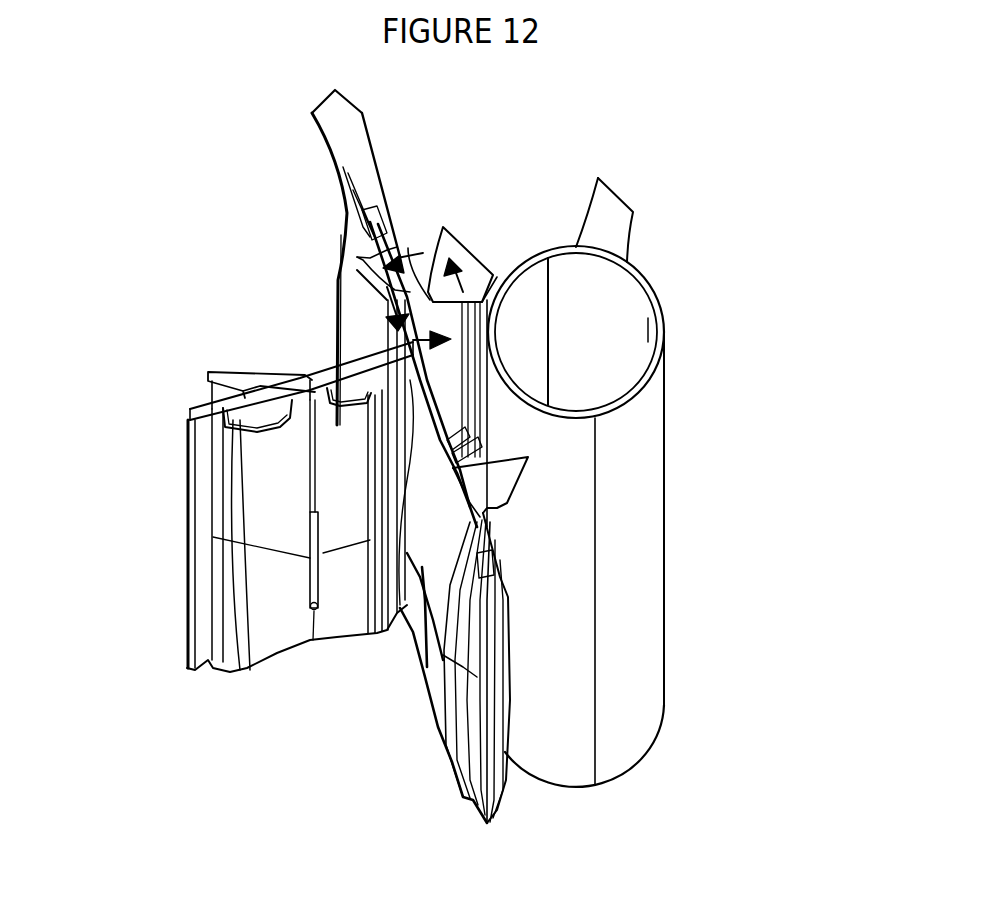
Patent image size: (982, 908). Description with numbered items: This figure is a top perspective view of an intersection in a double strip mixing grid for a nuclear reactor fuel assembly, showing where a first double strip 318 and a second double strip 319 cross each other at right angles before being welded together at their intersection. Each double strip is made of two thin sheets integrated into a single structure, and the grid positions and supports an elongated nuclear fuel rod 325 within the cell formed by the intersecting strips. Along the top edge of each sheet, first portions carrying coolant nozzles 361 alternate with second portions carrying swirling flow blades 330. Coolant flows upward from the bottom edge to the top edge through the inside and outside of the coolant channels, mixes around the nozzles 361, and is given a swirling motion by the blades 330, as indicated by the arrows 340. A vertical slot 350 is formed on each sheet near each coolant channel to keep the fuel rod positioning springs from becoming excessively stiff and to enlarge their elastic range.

The first double strip 318 is at (207, 668).
The second double strip 319 is at (473, 798).
The nuclear fuel rod 325 is at (642, 700).
The swirling flow blade 330 is at (603, 223).
The arrows indicating swirling motion of coolants 340 is at (408, 248).
The vertical slot 350 is at (313, 562).
The coolant nozzle 361 is at (195, 437).